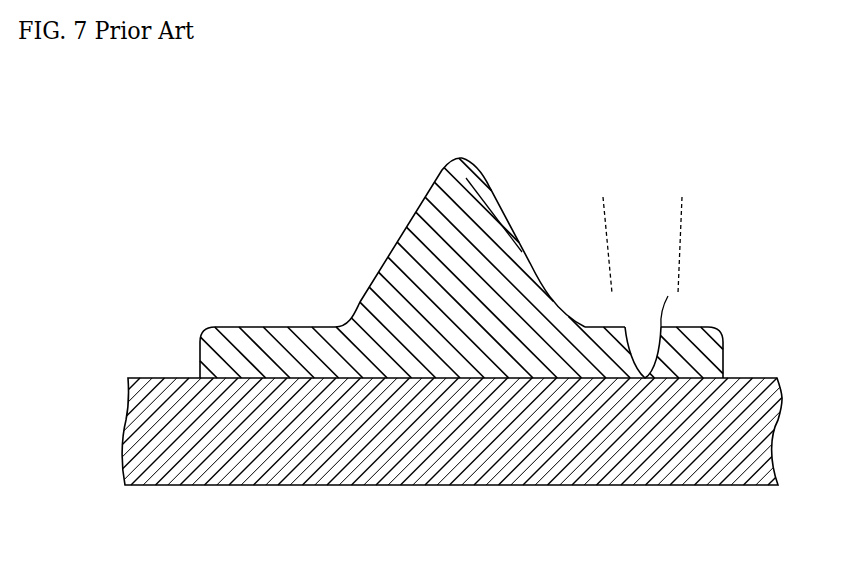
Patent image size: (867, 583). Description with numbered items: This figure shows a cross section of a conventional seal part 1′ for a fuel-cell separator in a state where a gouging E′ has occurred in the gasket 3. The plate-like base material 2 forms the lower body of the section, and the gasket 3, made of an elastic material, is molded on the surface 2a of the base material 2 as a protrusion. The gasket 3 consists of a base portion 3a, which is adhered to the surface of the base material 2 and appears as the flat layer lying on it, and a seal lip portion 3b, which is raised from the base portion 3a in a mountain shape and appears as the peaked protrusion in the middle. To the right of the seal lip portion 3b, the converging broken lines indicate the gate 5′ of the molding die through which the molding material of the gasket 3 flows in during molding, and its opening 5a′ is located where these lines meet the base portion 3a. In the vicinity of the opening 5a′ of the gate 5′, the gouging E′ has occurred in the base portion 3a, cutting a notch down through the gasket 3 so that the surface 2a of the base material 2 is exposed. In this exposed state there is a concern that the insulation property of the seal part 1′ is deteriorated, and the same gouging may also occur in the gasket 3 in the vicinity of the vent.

The seal part 1′ is at (248, 216).
The base material 2 is at (763, 418).
The surface of the base material 2a is at (300, 377).
The gasket 3 is at (562, 112).
The base portion 3a is at (593, 323).
The seal lip portion 3b is at (465, 178).
The gate 5′ is at (675, 245).
The opening of the gate 5a′ is at (603, 197).
The gouging E′ is at (627, 340).